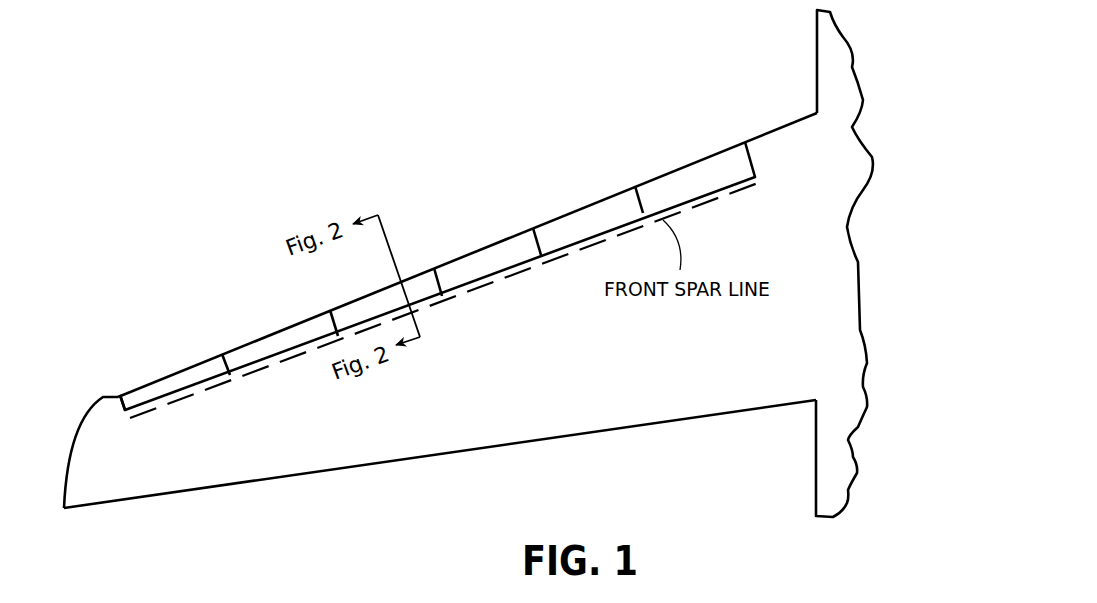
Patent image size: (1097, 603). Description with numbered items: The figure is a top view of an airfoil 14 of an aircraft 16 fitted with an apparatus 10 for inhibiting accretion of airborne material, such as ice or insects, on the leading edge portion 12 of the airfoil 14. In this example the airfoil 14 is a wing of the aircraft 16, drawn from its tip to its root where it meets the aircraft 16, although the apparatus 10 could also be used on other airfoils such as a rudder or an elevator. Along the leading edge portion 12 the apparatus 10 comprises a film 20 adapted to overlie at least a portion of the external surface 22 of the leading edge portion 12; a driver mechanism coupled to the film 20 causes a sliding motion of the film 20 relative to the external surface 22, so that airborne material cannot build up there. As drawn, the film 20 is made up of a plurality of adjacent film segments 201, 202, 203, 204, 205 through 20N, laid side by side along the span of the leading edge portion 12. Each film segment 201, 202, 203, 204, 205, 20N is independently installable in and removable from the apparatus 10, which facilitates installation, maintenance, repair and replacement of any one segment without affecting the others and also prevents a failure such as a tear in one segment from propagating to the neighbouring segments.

The apparatus 10 is at (463, 190).
The leading edge portion 12 is at (120, 361).
The airfoil 14 is at (635, 382).
The aircraft 16 is at (838, 80).
The film 20 is at (605, 212).
The film segment 201 is at (667, 187).
The film segment 202 is at (563, 227).
The film segment 203 is at (462, 268).
The film segment 204 is at (348, 318).
The film segment 205 is at (257, 352).
The film segment 20N is at (152, 390).
The external surface 22 is at (790, 155).